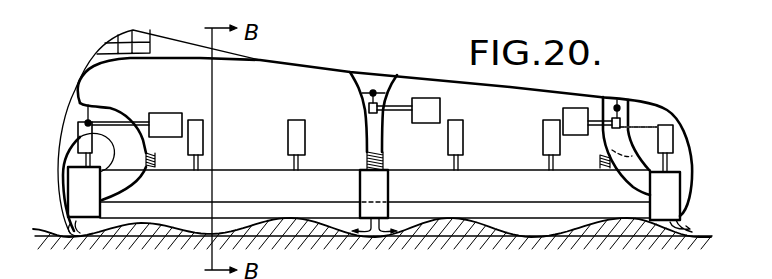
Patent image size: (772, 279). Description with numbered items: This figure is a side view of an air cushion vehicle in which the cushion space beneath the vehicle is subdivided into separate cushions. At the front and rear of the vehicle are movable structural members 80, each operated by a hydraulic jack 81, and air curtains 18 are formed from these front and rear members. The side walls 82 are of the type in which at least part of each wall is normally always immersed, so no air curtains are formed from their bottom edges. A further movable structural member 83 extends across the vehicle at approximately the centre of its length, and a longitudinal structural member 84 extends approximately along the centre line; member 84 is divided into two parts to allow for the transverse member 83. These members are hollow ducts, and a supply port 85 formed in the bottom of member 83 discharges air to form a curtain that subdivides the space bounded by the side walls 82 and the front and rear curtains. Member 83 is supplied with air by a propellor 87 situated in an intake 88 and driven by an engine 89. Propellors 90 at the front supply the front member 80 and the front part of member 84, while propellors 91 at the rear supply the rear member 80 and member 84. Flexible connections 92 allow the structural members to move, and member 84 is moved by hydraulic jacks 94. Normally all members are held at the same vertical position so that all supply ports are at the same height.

The fluid curtains 18 is at (78, 241).
The movable structural members 80 is at (78, 198).
The hydraulic jacks 81 is at (78, 126).
The side walls 82 is at (99, 236).
The movable structural member 83 is at (388, 188).
The movable structural member 84 is at (230, 213).
The supply port 85 is at (370, 210).
The propellor 87 is at (365, 77).
The intake 88 is at (383, 87).
The engine 89 is at (423, 117).
The propellors 90 is at (90, 106).
The propellors 91 is at (623, 107).
The flexible connections 92 is at (146, 165).
The hydraulic jacks 94 is at (290, 128).